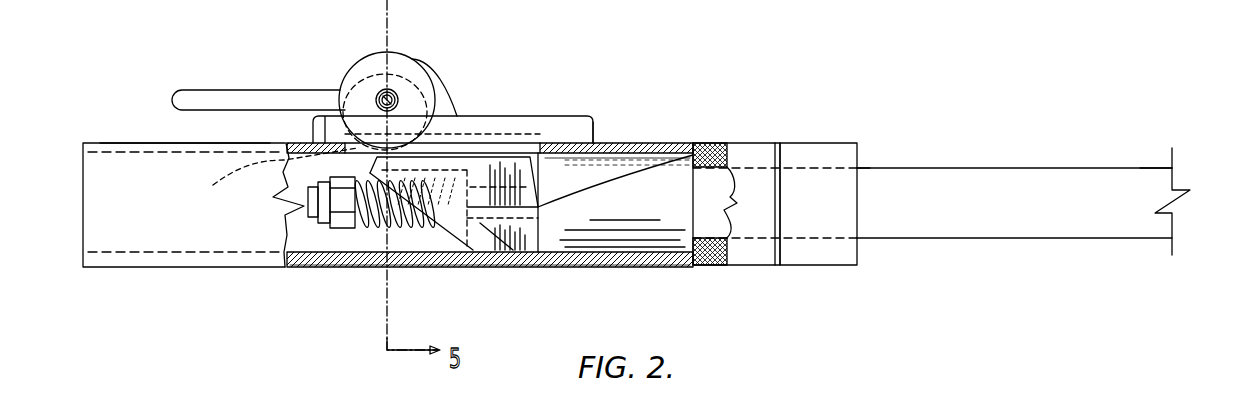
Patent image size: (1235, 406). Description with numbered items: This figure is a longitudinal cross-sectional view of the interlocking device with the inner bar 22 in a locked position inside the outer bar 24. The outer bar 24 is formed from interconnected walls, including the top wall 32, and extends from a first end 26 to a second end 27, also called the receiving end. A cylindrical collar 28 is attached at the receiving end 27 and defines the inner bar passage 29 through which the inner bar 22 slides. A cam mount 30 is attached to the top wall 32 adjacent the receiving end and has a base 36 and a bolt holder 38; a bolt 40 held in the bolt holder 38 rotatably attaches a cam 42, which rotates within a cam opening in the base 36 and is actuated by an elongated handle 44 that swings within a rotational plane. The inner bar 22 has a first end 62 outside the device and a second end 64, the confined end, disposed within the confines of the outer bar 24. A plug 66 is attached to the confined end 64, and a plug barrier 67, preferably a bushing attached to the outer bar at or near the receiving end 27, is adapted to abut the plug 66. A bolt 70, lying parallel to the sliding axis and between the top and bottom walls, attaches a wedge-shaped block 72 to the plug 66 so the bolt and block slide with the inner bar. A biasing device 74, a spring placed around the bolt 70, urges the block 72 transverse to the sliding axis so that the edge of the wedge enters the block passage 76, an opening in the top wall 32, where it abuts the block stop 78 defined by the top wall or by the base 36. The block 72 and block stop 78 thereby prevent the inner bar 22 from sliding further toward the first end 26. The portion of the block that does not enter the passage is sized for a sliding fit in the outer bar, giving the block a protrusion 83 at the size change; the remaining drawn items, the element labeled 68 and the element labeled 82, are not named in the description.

The inner bar 22 is at (1013, 158).
The outer bar 24 is at (600, 143).
The first end 26 is at (91, 143).
The second end 27 is at (758, 140).
The collar 28 is at (847, 143).
The inner bar passage 29 is at (858, 168).
The cam mount 30 is at (583, 113).
The top wall 32 is at (145, 143).
The base 36 is at (475, 115).
The bolt holder 38 is at (420, 74).
The bolt 40 is at (398, 88).
The cam 42 is at (358, 94).
The elongated handle 44 is at (197, 100).
The first end 62 is at (1150, 160).
The second end 64 is at (712, 147).
The plug 66 is at (627, 163).
The plug barrier 67 is at (713, 145).
The collar nut 68 is at (750, 208).
The bolt 70 is at (305, 205).
The block 72 is at (447, 243).
The biasing device 74 is at (300, 272).
The block passage 76 is at (482, 135).
The block stop 78 is at (279, 184).
The wedge 82 is at (482, 224).
The protrusion 83 is at (512, 240).